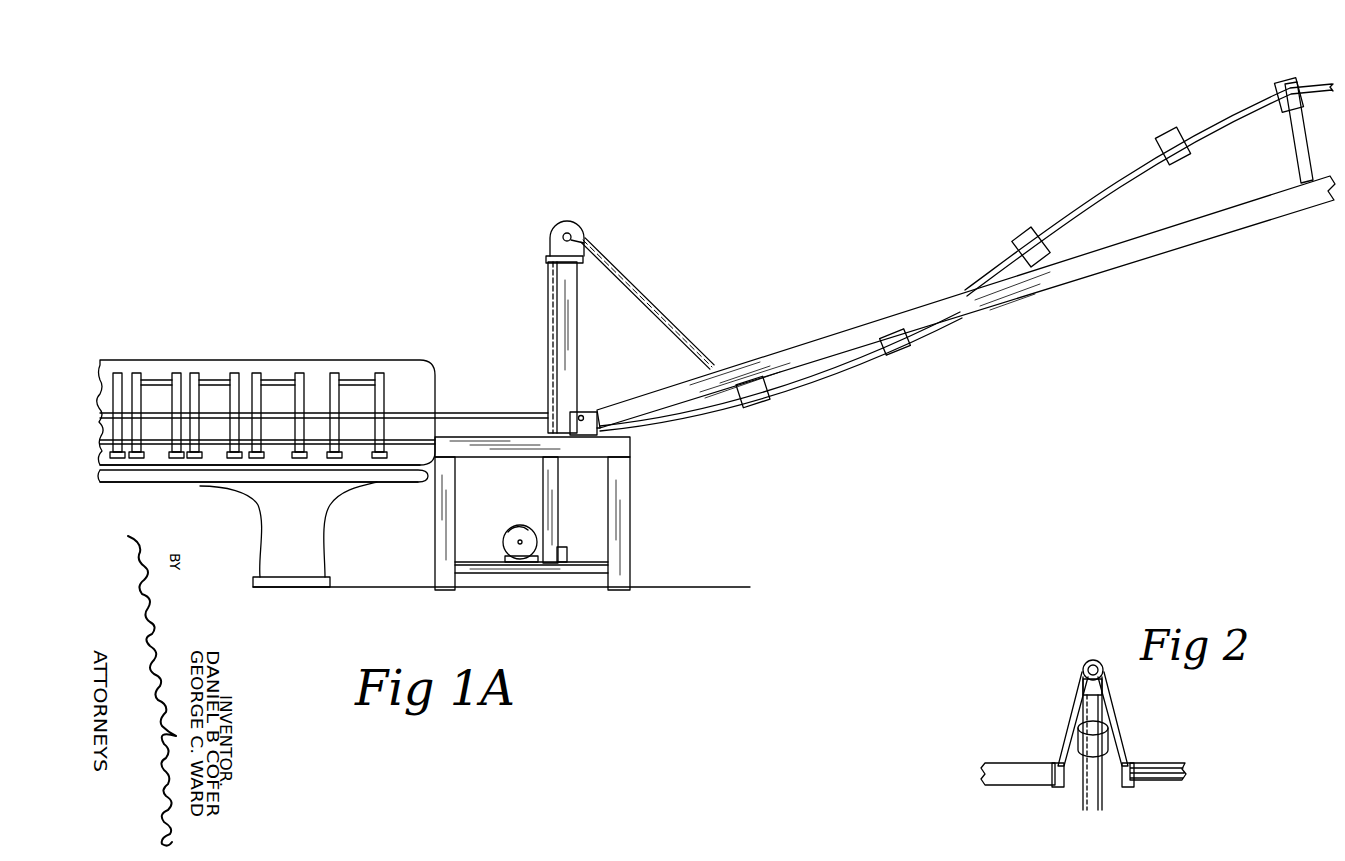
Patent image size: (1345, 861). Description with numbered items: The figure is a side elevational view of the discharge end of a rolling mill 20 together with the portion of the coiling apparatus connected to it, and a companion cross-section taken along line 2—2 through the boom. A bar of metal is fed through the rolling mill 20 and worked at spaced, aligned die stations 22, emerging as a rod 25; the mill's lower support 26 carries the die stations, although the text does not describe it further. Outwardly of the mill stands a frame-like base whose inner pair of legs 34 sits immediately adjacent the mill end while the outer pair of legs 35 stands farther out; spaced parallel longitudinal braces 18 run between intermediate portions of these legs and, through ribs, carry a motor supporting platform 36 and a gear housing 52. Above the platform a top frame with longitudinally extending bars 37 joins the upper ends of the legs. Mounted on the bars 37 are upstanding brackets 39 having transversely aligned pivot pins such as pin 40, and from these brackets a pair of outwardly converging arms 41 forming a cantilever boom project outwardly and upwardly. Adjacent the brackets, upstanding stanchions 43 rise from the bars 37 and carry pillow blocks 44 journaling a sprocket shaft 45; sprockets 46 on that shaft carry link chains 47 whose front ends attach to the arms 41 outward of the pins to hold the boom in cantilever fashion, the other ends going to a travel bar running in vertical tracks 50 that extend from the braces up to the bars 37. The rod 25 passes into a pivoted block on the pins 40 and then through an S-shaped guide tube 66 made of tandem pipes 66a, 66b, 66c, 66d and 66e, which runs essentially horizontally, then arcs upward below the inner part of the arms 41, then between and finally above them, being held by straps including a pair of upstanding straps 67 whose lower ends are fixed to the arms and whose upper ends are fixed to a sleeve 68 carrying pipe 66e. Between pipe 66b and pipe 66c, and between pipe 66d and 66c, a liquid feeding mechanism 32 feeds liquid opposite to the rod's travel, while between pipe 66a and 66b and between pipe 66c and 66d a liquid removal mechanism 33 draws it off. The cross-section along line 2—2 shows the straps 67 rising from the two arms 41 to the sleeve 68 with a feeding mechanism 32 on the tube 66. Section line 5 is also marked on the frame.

In FIG. 1A, the section line 2— 2 is at (1262, 57).
In FIG. 1A, the section line 5- 5 is at (540, 430).
In FIG. 1A, the longitudinal braces 18 is at (480, 587).
In FIG. 1A, the rolling mill 20 is at (200, 487).
In FIG. 1A, the die stations 22 is at (111, 372).
In FIG. 1A, the rod 25 is at (132, 418).
In FIG. 1A, the support plate 26 is at (275, 470).
In FIG. 1A, the liquid feeding mechanism 32 is at (908, 343).
In FIG. 2, the liquid feeding mechanism 32 is at (1110, 742).
In FIG. 1A, the liquid removal mechanism 33 is at (766, 400).
In FIG. 1A, the inner pair of legs 34 is at (438, 505).
In FIG. 1A, the outer pair of legs 35 is at (628, 505).
In FIG. 1A, the motor supporting platform 36 is at (488, 562).
In FIG. 1A, the longitudinally extending bars 37 is at (480, 452).
In FIG. 1A, the upstanding brackets 39 is at (600, 430).
In FIG. 1A, the pivot pin 40 is at (585, 410).
In FIG. 1A, the arms 41 is at (848, 330).
In FIG. 2, the arms 41 is at (1020, 762).
In FIG. 1A, the stanchions 43 is at (572, 340).
In FIG. 1A, the pillow blocks 44 is at (548, 250).
In FIG. 1A, the sprocket shaft 45 is at (571, 233).
In FIG. 1A, the sprockets 46 is at (587, 243).
In FIG. 1A, the link chains 47 is at (640, 298).
In FIG. 1A, the tracks 50 is at (556, 500).
In FIG. 1A, the gear housing 52 is at (566, 545).
In FIG. 1A, the guide tube 66 is at (1201, 121).
In FIG. 2, the guide tube 66 is at (1100, 800).
In FIG. 1A, the pipe 66a is at (724, 405).
In FIG. 1A, the pipe 66b is at (845, 365).
In FIG. 1A, the pipe 66c is at (1000, 278).
In FIG. 1A, the pipe 66d is at (1113, 189).
In FIG. 1A, the pipe 66e is at (1225, 124).
In FIG. 1A, the upstanding straps 67 is at (1296, 150).
In FIG. 2, the upstanding straps 67 is at (1068, 712).
In FIG. 1A, the sleeve 68 is at (1300, 82).
In FIG. 2, the sleeve 68 is at (1097, 663).